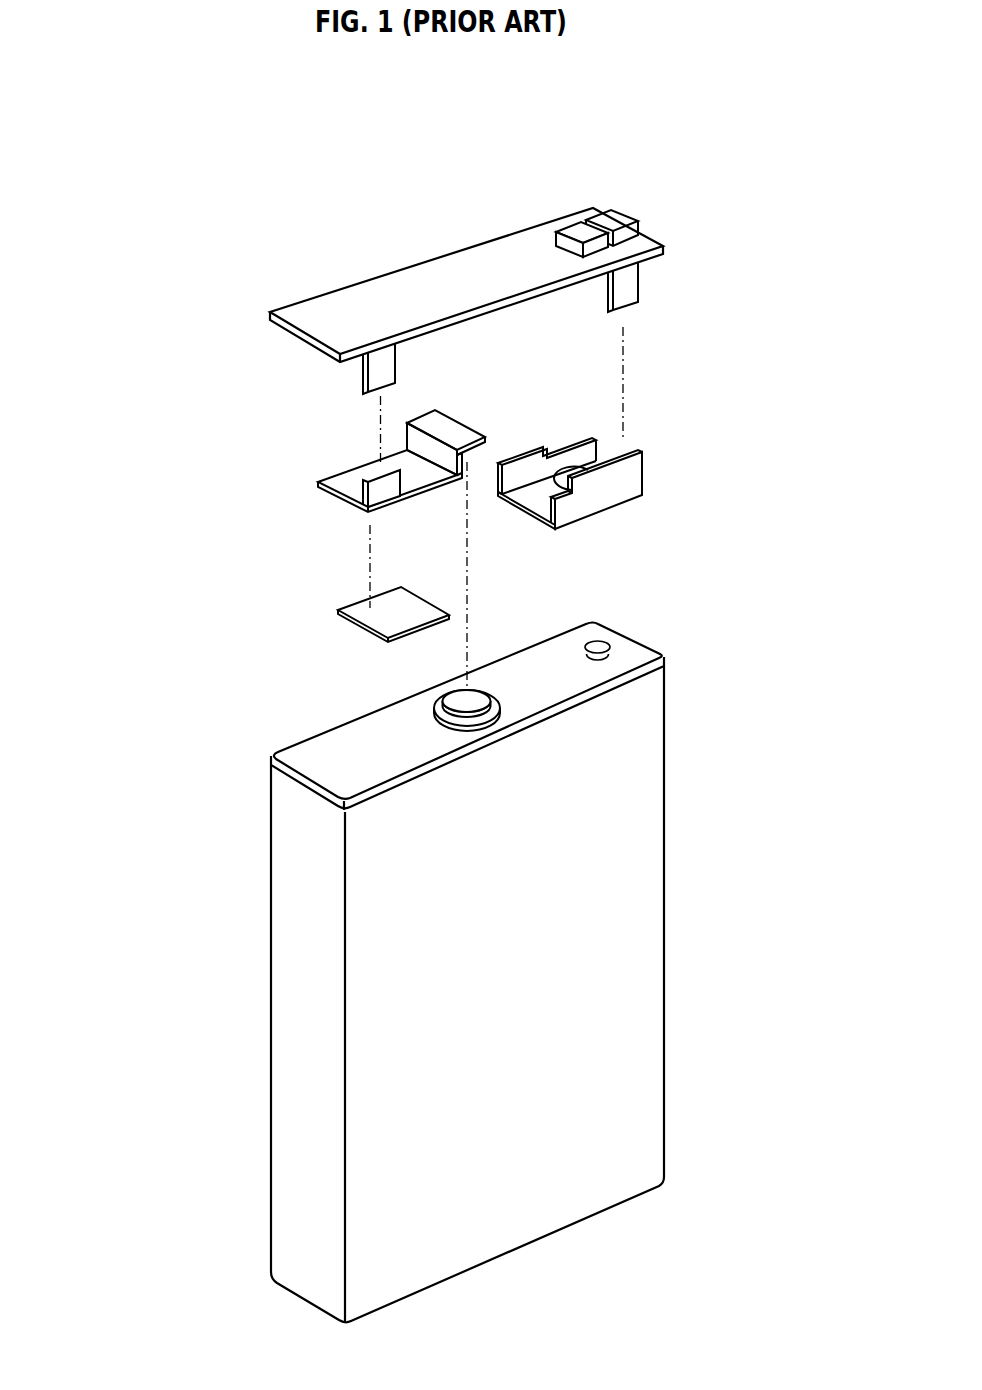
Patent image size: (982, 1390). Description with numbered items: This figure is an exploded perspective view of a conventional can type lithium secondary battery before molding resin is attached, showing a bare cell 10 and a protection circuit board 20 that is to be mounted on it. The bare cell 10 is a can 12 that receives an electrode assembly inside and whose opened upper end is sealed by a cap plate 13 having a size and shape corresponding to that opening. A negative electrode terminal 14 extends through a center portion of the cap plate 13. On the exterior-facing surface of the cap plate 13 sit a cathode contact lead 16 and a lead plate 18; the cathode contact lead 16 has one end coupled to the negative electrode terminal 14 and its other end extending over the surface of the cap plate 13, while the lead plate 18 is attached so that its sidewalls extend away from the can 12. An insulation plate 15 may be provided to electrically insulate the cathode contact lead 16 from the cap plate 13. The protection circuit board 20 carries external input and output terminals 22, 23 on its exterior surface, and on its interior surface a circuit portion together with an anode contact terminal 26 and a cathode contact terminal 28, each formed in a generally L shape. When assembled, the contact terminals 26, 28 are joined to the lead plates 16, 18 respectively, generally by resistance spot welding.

The bare cell 10 is at (434, 973).
The can 12 is at (647, 798).
The cap plate 13 is at (302, 753).
The negative electrode terminal 14 is at (447, 698).
The insulating plate 15 is at (360, 603).
The cathode contact lead 16 is at (348, 480).
The lead plate 18 is at (625, 479).
The protection circuit board 20 is at (340, 295).
The external input and output terminal 22 is at (610, 226).
The external input and output terminal 23 is at (570, 231).
The anode contact terminal 26 is at (383, 368).
The cathode contact terminal 28 is at (633, 290).